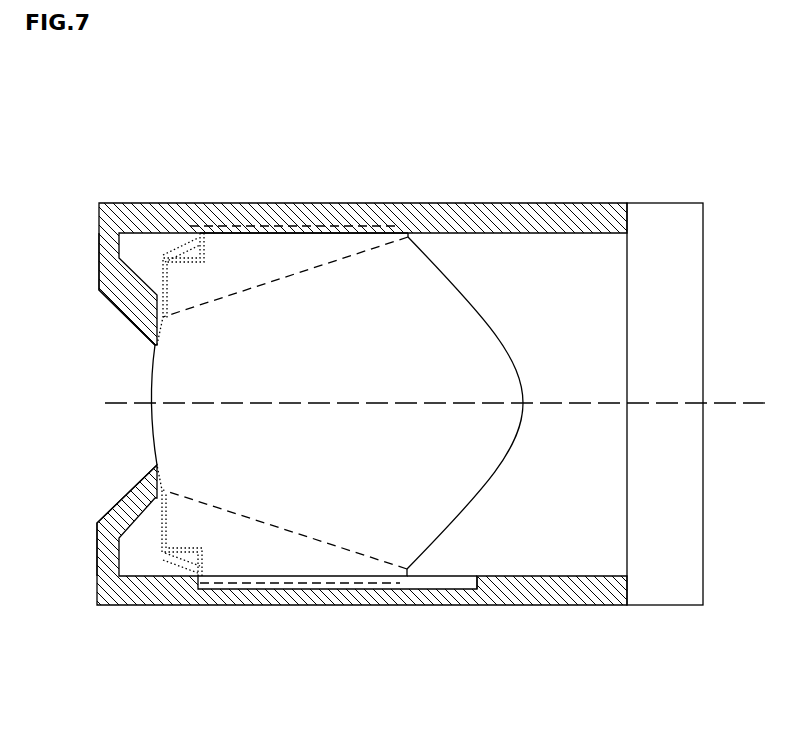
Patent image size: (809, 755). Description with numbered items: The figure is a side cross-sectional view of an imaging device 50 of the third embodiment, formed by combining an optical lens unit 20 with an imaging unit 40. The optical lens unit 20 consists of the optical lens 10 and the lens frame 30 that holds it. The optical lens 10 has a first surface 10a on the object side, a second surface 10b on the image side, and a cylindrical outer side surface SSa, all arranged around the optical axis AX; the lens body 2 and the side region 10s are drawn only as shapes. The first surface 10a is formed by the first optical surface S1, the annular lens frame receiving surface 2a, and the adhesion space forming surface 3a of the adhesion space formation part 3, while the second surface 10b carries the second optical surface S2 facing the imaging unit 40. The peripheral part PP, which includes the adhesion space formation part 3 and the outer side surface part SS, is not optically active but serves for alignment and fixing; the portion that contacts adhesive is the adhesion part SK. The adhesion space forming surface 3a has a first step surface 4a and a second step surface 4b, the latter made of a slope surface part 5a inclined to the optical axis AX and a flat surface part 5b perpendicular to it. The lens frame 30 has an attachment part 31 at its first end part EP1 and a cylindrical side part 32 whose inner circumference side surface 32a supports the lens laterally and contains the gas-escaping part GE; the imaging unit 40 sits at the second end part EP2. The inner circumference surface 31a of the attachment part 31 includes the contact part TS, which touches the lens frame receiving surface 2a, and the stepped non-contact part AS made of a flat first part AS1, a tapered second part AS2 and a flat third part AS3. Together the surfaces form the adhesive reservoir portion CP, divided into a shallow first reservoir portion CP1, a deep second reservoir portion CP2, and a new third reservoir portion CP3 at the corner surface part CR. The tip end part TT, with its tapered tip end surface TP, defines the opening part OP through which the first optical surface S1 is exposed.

The lens element 2 is at (140, 345).
The lens frame receiving surface 2a is at (152, 341).
The adhesion space formation part 3 is at (140, 262).
The adhesion space forming surface 3a is at (143, 270).
The first step surface 4a is at (155, 318).
The second step surface 4b is at (172, 243).
The slope surface part 5a is at (160, 243).
The flat surface part 5b is at (190, 240).
The optical lens 10 is at (510, 315).
The first surface 10a is at (148, 442).
The second surface 10b is at (528, 456).
The lens side surface 10s is at (508, 355).
The optical lens unit 20 is at (526, 190).
The lens frame 30 is at (470, 210).
The attachment part 31 is at (99, 265).
The inner circumference surface 31a is at (170, 318).
The cylindrical side part 32 is at (405, 205).
The inner circumference side surface 32a is at (330, 236).
The imaging unit 40 is at (700, 358).
The imaging device 50 is at (641, 170).
The non-contact part AS is at (226, 273).
The first part AS1 is at (170, 300).
The second part AS2 is at (168, 260).
The third part AS3 is at (148, 290).
The optical axis AX is at (726, 412).
The adhesive reservoir portion CP is at (140, 240).
The first reservoir portion CP1 is at (150, 296).
The second reservoir portion CP2 is at (175, 240).
The third reservoir portion CP3 is at (150, 240).
The corner surface part CR is at (128, 235).
The first end part EP1 is at (118, 240).
The second end part EP2 is at (613, 205).
The gas-escaping part GE is at (452, 582).
The opening part OP is at (100, 385).
The peripheral part PP is at (205, 235).
The first optical surface S1 is at (148, 438).
The second optical surface S2 is at (493, 492).
The adhesion part SK is at (200, 240).
The outer side surface part SS is at (290, 230).
The outer side surface SSa is at (355, 232).
The tip end surface TP is at (160, 330).
The contact part TS is at (163, 331).
The tip end part TT is at (152, 318).